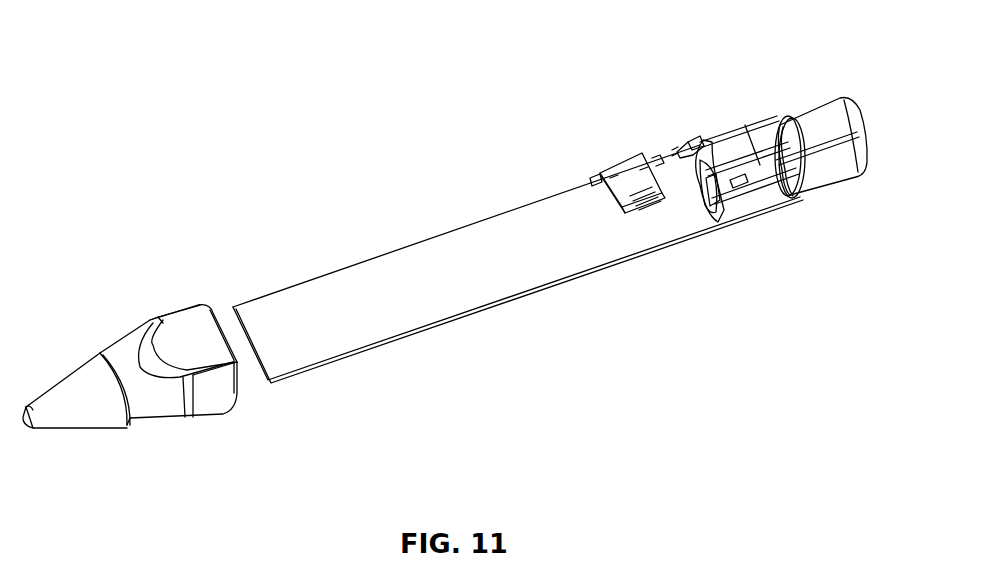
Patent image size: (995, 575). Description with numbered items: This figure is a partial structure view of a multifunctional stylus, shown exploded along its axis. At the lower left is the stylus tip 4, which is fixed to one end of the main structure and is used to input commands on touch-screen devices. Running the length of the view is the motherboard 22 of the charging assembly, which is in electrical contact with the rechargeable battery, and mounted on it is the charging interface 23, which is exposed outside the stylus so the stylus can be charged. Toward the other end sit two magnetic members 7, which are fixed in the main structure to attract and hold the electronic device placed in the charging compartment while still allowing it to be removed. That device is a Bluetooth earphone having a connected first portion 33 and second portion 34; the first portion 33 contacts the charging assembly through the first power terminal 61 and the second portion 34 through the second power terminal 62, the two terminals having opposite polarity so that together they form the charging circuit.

The stylus tip 4 is at (67, 400).
The motherboard 22 is at (270, 308).
The charging interface 23 is at (610, 172).
The magnetic member 7 is at (702, 142).
The first portion 33 is at (737, 158).
The second portion 34 is at (805, 132).
The first power terminal 61 is at (703, 180).
The second power terminal 62 is at (712, 182).